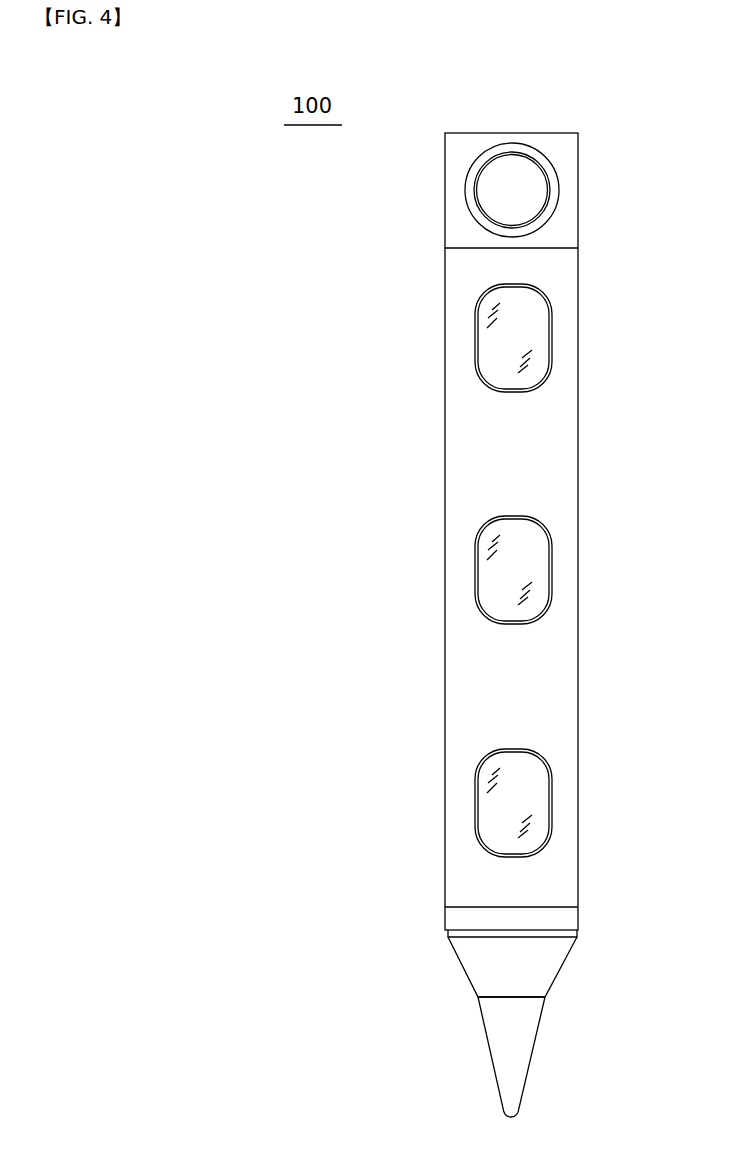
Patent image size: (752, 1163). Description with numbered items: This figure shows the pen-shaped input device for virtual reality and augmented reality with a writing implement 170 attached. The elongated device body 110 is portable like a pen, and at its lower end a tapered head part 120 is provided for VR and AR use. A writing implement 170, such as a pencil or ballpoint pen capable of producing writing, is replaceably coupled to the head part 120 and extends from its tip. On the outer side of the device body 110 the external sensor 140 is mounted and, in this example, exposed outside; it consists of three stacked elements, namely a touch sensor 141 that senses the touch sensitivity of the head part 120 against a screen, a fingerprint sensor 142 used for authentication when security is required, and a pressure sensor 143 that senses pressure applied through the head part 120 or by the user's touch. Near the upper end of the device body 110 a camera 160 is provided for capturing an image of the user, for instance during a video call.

The device body 110 is at (445, 282).
The head part 120 is at (473, 965).
The external sensor 140 is at (672, 338).
The touch sensor 141 is at (540, 334).
The fingerprint sensor 142 is at (540, 568).
The pressure sensor 143 is at (540, 799).
The camera 160 is at (530, 190).
The writing implement 170 is at (525, 1042).